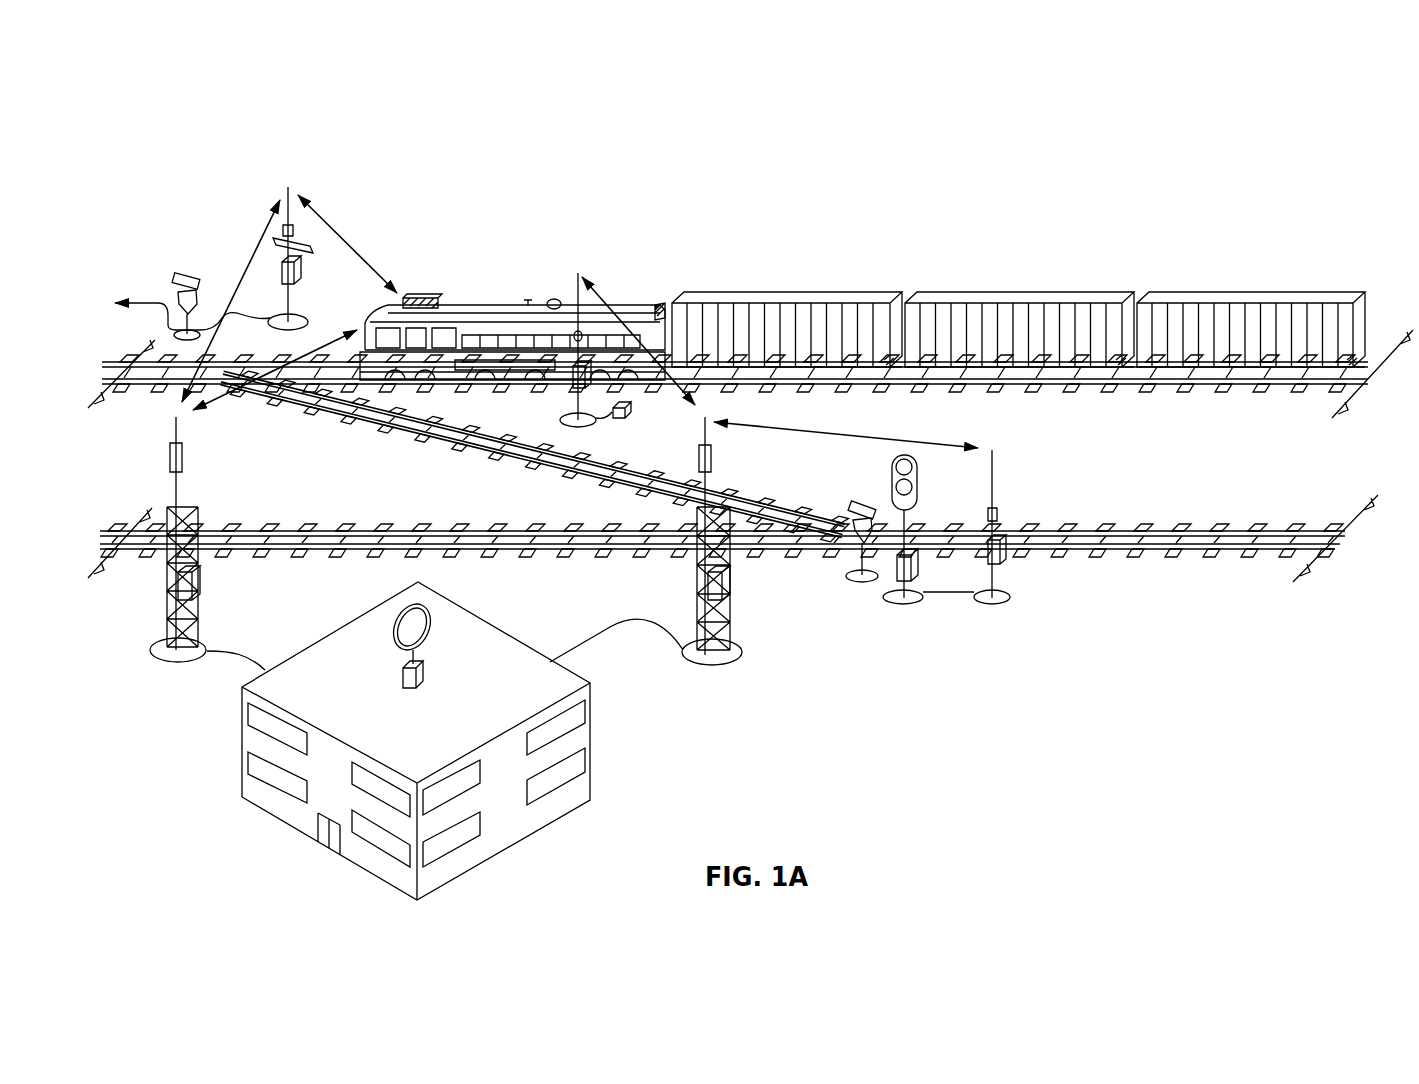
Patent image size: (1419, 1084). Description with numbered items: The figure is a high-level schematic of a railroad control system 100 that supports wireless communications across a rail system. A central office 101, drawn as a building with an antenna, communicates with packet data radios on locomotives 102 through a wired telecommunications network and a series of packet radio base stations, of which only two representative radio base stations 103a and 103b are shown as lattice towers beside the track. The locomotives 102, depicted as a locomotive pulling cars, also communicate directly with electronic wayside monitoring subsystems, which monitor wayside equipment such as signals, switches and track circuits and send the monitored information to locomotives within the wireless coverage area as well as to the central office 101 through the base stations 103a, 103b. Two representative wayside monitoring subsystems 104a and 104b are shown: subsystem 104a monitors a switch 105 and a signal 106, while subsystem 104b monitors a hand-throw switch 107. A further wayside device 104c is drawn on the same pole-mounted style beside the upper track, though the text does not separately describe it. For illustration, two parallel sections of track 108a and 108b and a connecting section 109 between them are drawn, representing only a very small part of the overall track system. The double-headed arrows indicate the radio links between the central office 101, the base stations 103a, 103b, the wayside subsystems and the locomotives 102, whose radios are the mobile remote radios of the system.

The railroad control system 100 is at (872, 150).
The central office 101 is at (236, 752).
The locomotive 102 is at (636, 297).
The radio base station 103a is at (205, 578).
The radio base station 103b is at (735, 578).
The wayside monitoring subsystem 104a is at (1004, 568).
The wayside monitoring subsystem 104b is at (304, 288).
The wayside device 104c is at (570, 404).
The switch 105 is at (857, 504).
The signal 106 is at (921, 478).
The hand-throw switch 107 is at (182, 272).
The section of track 108a is at (1218, 398).
The section of track 108b is at (1218, 566).
The connecting section 109 is at (454, 460).